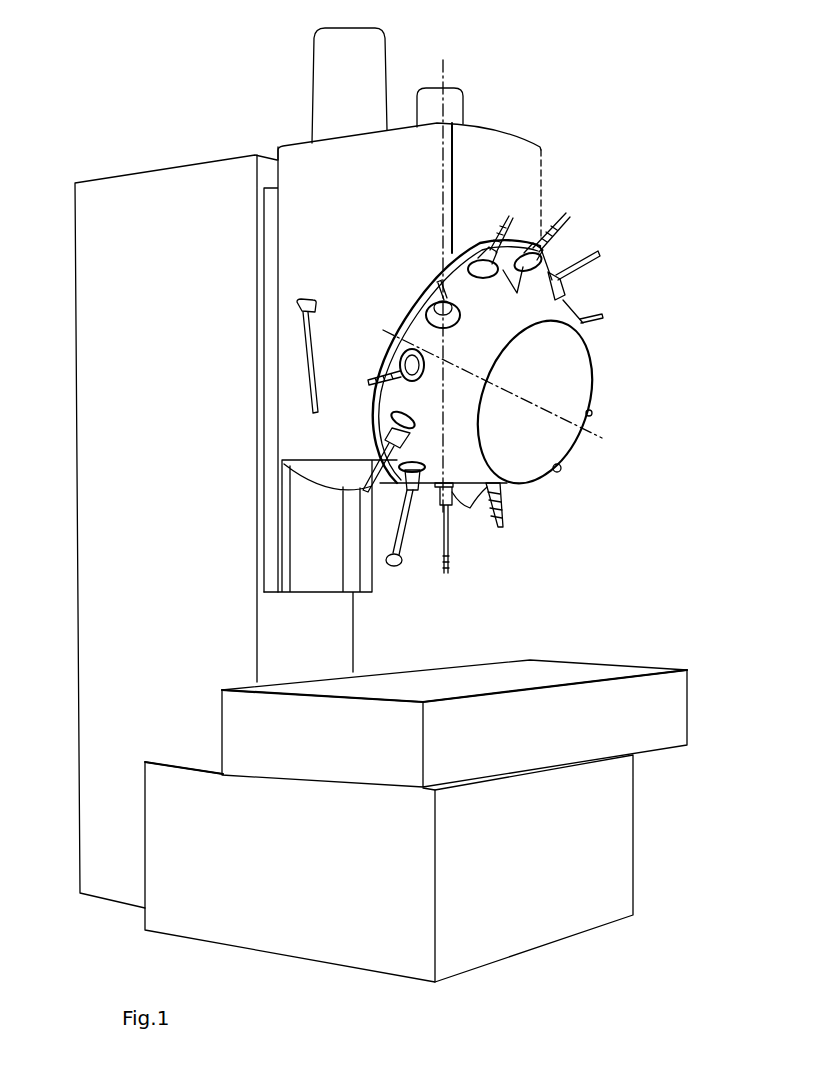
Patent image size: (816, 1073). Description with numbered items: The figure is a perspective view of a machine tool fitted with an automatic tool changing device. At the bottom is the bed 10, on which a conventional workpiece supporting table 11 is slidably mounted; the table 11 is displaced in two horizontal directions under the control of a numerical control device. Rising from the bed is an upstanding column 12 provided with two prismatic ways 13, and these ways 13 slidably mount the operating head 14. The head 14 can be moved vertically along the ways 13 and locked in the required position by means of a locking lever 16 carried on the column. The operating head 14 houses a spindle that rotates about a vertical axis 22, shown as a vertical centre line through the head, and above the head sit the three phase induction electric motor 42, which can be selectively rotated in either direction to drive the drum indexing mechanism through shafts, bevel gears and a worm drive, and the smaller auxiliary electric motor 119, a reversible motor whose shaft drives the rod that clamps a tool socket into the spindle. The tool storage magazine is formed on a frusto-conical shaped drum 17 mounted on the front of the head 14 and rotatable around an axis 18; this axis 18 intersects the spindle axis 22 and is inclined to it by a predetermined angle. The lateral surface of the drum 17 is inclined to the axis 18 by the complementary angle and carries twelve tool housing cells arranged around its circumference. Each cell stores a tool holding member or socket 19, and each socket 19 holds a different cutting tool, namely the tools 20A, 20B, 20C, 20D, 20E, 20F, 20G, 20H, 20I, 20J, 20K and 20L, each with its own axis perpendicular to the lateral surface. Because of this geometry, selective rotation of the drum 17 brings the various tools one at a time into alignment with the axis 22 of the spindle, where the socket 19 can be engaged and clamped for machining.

The bed 10 is at (626, 857).
The workpiece supporting table 11 is at (572, 673).
The upstanding column 12 is at (82, 524).
The prismatic ways 13 is at (365, 560).
The operating head 14 is at (548, 140).
The locking lever 16 is at (318, 410).
The frusto-conical shaped drum 17 is at (587, 363).
The axis of the drum 18 is at (602, 438).
The tool holding member or socket 19 is at (494, 400).
The cutting tool 20A is at (449, 548).
The cutting tool 20B is at (404, 548).
The cutting tool 20C is at (368, 468).
The cutting tool 20D is at (399, 363).
The cutting tool 20E is at (432, 292).
The cutting tool 20F is at (506, 228).
The cutting tool 20G is at (568, 222).
The cutting tool 20H is at (600, 255).
The cutting tool 20I is at (603, 316).
The cutting tool 20J is at (593, 413).
The cutting tool 20K is at (561, 472).
The cutting tool 20L is at (507, 515).
The vertical axis 22 is at (438, 63).
The three phase induction electric motor 42 is at (316, 73).
The auxiliary electric motor 119 is at (455, 108).